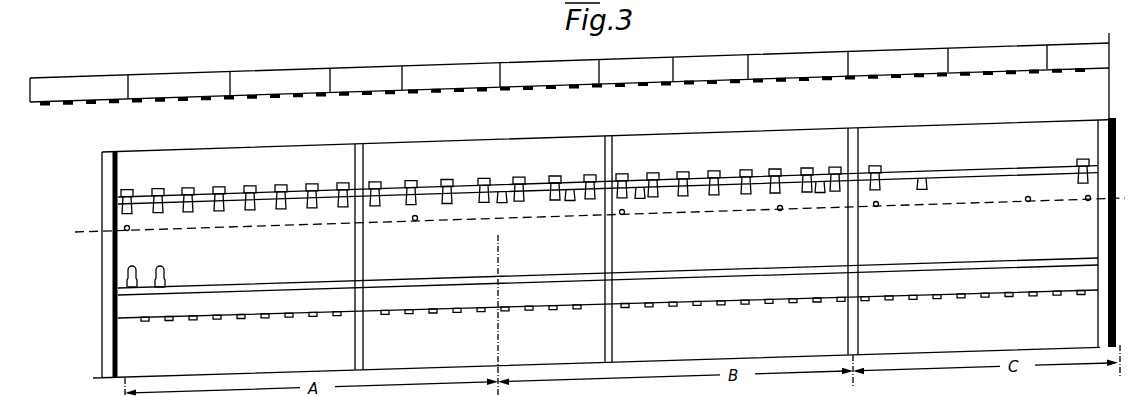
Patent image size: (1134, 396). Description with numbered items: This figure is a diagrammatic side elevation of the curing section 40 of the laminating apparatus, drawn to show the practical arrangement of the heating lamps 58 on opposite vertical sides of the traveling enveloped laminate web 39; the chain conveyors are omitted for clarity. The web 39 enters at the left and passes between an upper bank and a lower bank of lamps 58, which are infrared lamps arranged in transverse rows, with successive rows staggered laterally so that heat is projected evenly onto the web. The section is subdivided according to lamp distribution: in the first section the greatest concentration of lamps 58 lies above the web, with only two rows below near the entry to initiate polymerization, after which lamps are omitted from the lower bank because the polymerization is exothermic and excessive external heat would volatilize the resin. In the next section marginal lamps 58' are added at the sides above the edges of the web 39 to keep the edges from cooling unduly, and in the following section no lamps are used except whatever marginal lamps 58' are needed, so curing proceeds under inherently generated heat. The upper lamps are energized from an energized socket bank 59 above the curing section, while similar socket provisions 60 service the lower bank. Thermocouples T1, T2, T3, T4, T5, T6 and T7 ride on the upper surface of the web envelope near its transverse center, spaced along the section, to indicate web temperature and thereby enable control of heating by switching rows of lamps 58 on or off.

The energized socket bank 59 is at (152, 83).
The curing section 40 is at (700, 118).
The heating lamps 58 is at (585, 223).
The marginal lamps 58' is at (786, 196).
The enveloped laminate web 39 is at (265, 227).
The socket provisions 60 is at (130, 312).
The thermocouple T1 is at (128, 230).
The thermocouple T2 is at (416, 220).
The thermocouple T3 is at (623, 214).
The thermocouple T4 is at (780, 210).
The thermocouple T5 is at (876, 206).
The thermocouple T6 is at (1028, 201).
The thermocouple T7 is at (1088, 200).